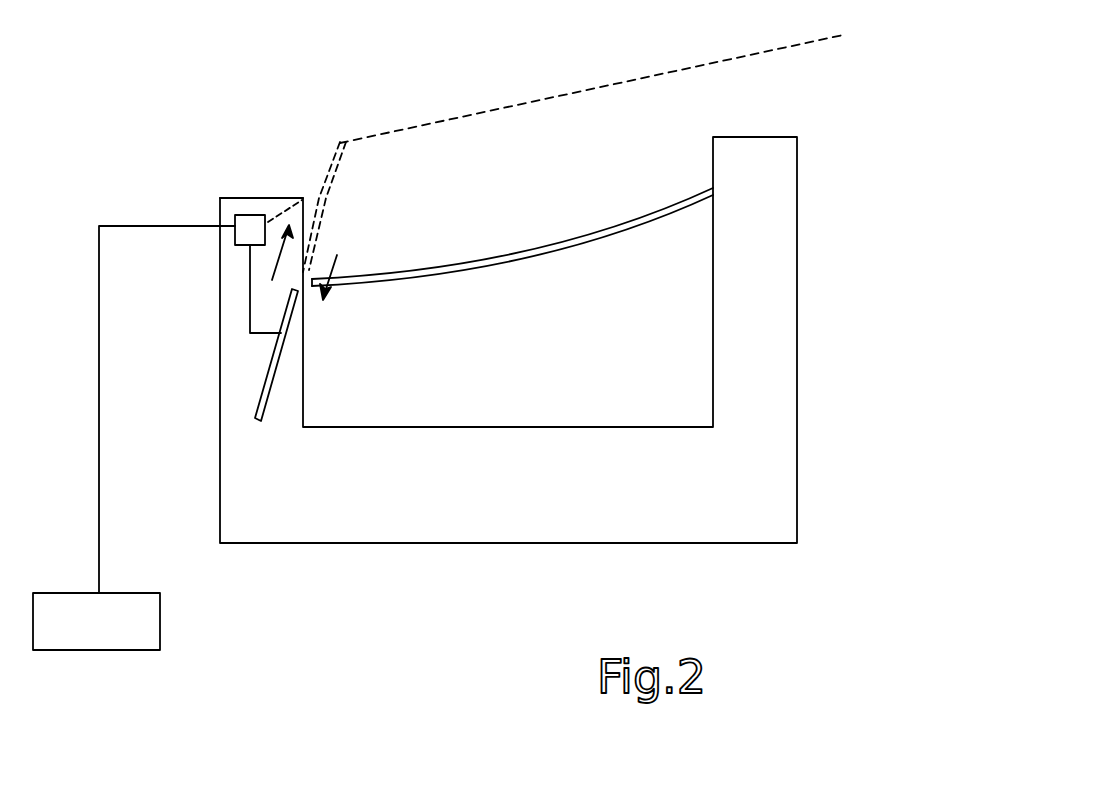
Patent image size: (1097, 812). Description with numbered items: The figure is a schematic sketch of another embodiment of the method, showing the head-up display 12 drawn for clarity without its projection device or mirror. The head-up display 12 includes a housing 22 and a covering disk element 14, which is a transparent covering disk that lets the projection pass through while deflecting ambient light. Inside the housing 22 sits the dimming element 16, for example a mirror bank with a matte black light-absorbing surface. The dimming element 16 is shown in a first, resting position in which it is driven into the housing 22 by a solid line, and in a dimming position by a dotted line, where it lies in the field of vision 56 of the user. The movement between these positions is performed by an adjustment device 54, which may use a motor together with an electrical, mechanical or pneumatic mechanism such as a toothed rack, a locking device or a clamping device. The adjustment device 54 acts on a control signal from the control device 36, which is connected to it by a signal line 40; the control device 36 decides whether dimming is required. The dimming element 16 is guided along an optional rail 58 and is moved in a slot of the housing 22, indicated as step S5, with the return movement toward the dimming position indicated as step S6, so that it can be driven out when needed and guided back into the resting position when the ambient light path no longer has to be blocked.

The head-up display 12 is at (481, 571).
The covering disk element 14 is at (575, 250).
The dimming element 16 is at (322, 200).
The housing 22 is at (219, 413).
The control device 36 is at (160, 621).
The signal line 40 is at (99, 483).
The adjustment device 54 is at (250, 215).
The field of vision 56 is at (586, 90).
The rail 58 is at (283, 373).
The moving step S5 is at (278, 256).
The step S6 arrow S6 is at (337, 265).